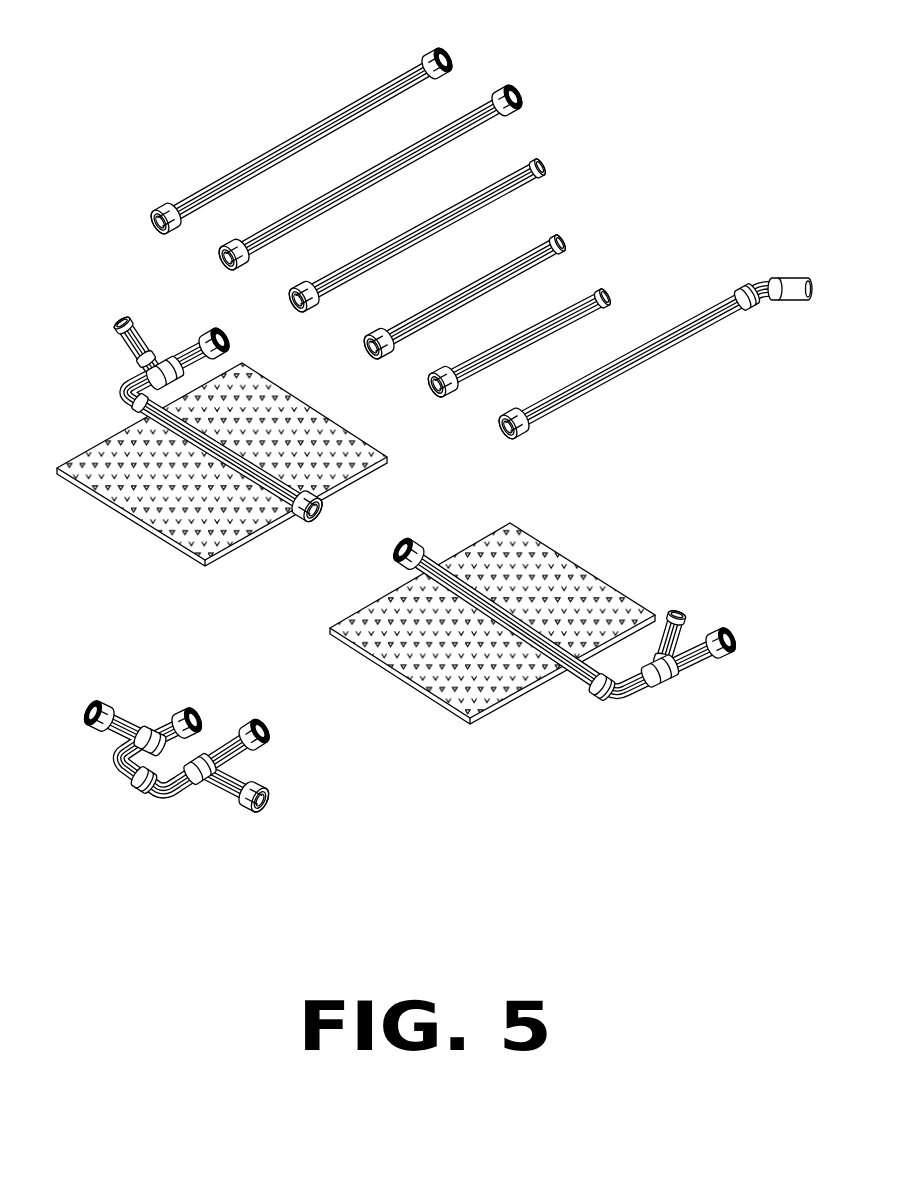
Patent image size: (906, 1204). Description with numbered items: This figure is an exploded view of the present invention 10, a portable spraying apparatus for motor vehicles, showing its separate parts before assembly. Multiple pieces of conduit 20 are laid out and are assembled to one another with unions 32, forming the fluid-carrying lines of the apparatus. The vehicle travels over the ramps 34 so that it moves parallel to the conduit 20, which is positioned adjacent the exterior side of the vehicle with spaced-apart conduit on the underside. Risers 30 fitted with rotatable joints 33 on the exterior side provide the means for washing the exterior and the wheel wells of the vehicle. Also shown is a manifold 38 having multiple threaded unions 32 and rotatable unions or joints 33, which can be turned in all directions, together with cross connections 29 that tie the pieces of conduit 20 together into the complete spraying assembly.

The present invention 10 is at (183, 123).
The conduit 20 is at (407, 147).
The cross connections 29 is at (393, 578).
The risers 30 is at (137, 318).
The unions 32 is at (150, 228).
The rotatable joints 33 is at (166, 360).
The ramps 34 is at (140, 521).
The manifold 38 is at (165, 798).